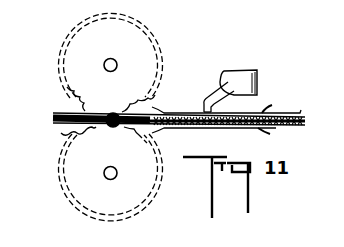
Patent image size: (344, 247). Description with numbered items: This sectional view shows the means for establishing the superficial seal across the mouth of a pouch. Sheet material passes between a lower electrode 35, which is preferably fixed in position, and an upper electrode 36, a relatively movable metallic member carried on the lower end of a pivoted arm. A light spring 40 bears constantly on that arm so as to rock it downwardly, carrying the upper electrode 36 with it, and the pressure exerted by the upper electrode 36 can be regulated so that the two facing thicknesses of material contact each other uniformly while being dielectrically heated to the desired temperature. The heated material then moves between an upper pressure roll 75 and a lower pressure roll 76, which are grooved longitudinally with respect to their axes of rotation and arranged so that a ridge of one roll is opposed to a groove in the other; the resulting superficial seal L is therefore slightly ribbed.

The partially completed superficial seal L is at (58, 113).
The upper pressure roll 75 is at (153, 95).
The lower pressure roll 76 is at (95, 135).
The light spring 40 is at (224, 71).
The upper electrode 36 is at (261, 113).
The lower electrode 35 is at (263, 131).